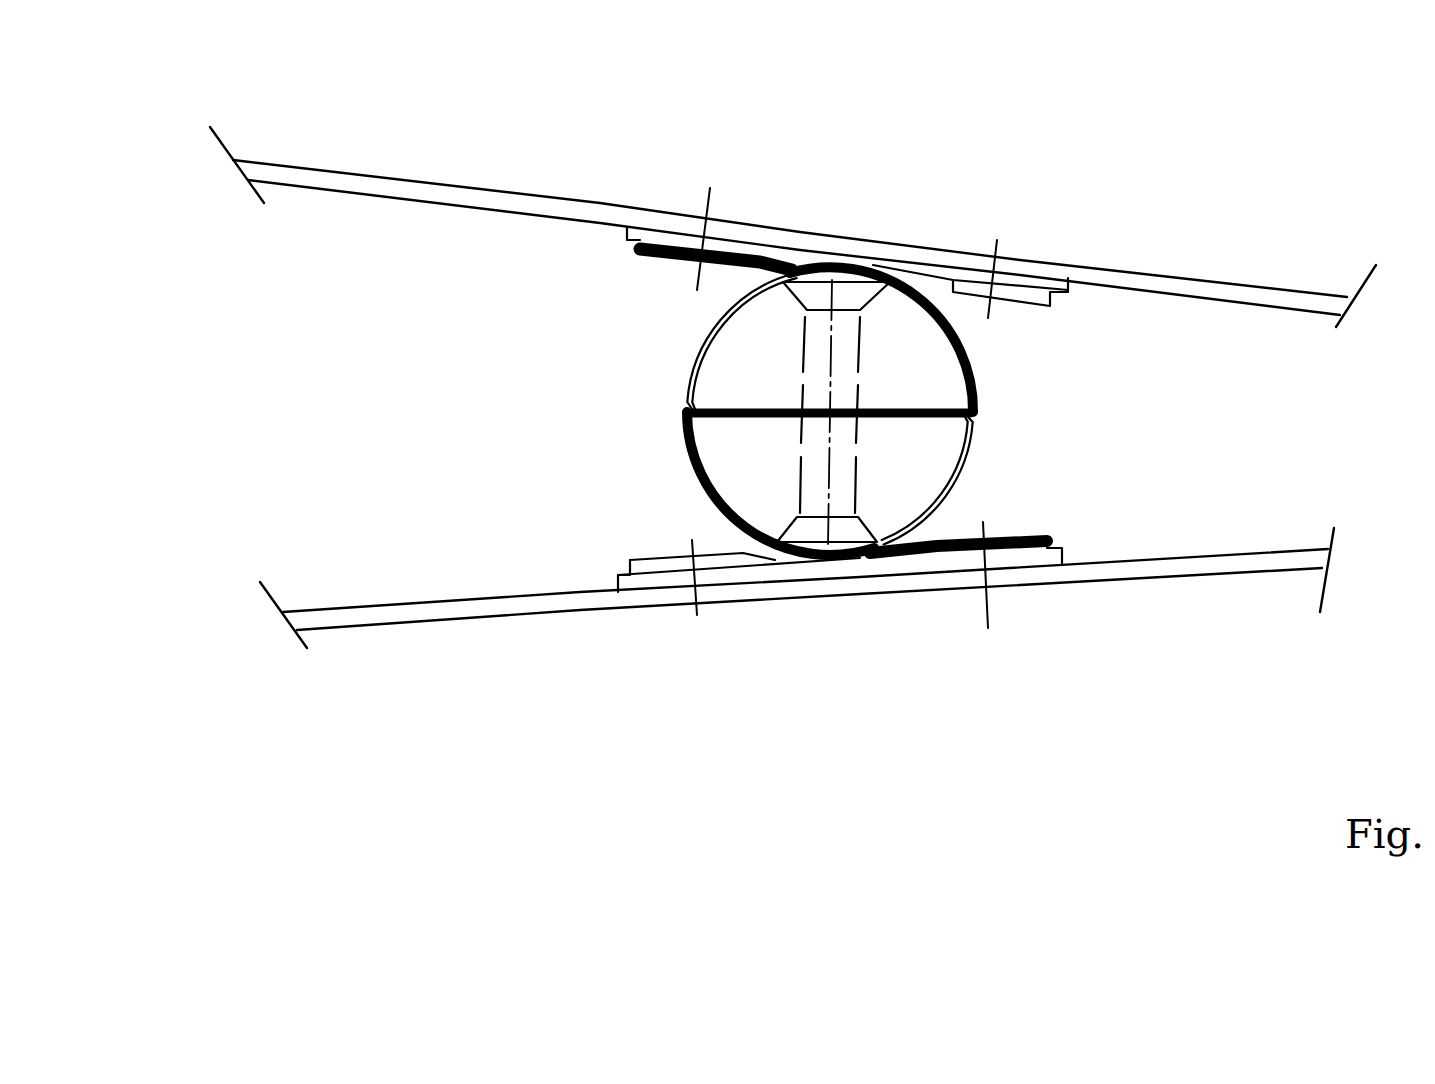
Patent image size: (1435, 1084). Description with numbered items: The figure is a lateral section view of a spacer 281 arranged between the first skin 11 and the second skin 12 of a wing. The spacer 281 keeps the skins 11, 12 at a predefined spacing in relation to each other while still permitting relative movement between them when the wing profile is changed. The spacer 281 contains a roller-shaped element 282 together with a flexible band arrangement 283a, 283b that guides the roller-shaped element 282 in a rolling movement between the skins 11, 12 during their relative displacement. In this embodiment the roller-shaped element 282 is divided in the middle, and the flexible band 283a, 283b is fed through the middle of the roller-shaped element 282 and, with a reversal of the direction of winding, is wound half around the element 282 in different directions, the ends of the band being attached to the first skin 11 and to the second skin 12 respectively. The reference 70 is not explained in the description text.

The first skin 11 is at (1217, 286).
The second skin 12 is at (355, 623).
The bearing assembly 70 is at (808, 777).
The spacer 281 is at (904, 411).
The roller-shaped element 282 is at (872, 502).
The flexible band 283a is at (662, 245).
The flexible band 283b is at (953, 290).